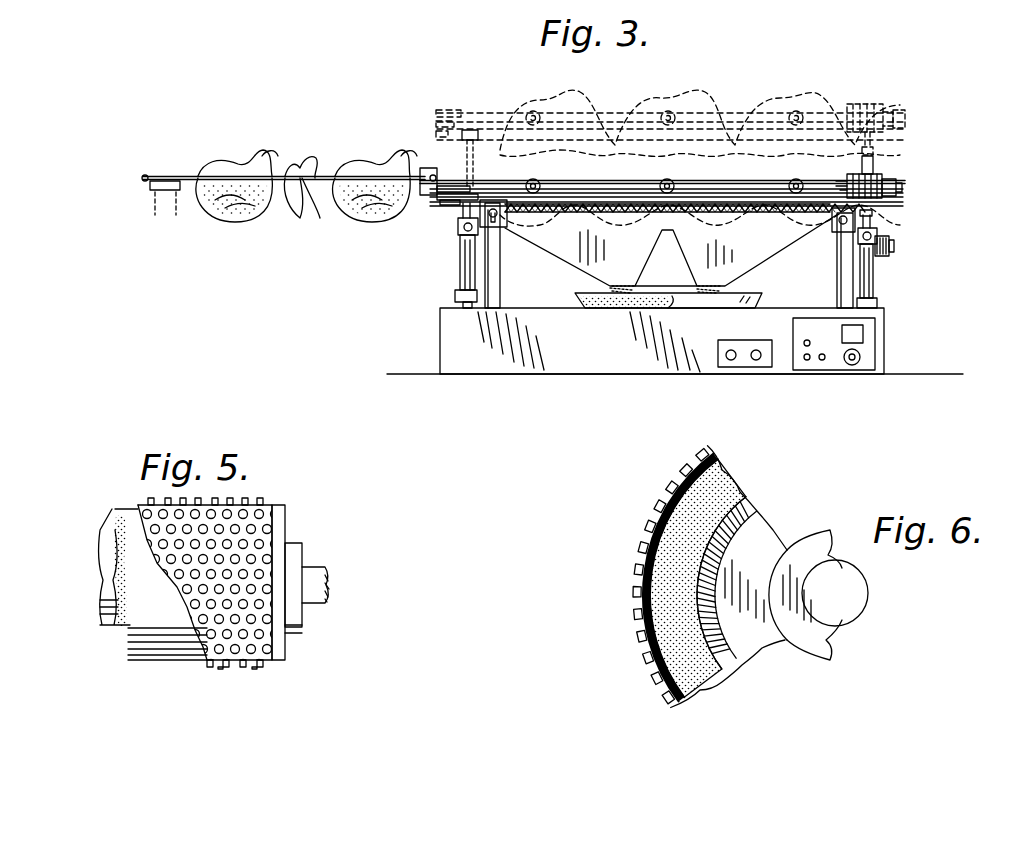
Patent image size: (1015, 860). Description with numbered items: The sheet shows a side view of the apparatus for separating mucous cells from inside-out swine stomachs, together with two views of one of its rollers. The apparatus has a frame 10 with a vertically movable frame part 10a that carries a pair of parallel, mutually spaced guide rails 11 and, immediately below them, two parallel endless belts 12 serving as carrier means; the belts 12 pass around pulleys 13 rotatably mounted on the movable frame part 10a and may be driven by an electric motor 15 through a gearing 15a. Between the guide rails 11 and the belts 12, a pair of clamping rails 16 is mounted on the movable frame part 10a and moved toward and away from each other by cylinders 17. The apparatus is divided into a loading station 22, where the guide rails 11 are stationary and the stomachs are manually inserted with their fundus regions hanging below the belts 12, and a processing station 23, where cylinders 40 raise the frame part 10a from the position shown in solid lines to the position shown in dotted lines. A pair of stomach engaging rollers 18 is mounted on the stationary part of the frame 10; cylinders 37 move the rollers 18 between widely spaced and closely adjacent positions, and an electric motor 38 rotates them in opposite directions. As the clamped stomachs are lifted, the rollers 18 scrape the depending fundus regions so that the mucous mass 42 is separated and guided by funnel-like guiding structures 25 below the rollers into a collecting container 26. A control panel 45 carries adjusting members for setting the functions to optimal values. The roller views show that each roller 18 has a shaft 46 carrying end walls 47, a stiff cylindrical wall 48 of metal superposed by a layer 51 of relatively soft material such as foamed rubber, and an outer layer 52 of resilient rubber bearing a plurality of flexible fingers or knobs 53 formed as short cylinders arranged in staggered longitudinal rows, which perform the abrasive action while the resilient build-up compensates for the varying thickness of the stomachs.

In FIG. 3, the frame 10 is at (436, 338).
In FIG. 3, the vertically movable frame part 10a is at (750, 103).
In FIG. 3, the guide rails 11 is at (182, 176).
In FIG. 3, the endless belts 12 is at (468, 205).
In FIG. 3, the pulleys 13 is at (428, 198).
In FIG. 3, the electric motor 15 is at (866, 104).
In FIG. 3, the gearing 15a is at (906, 121).
In FIG. 3, the clamping rails 16 is at (514, 180).
In FIG. 3, the cylinders 17 is at (535, 180).
In FIG. 3, the stomach engaging rollers 18 is at (790, 256).
In FIG. 5, the stomach engaging rollers 18 is at (282, 503).
In FIG. 6, the stomach engaging rollers 18 is at (702, 456).
In FIG. 3, the loading station 22 is at (290, 172).
In FIG. 3, the processing station 23 is at (630, 182).
In FIG. 3, the funnel-like guiding structures 25 is at (562, 262).
In FIG. 3, the collecting container 26 is at (690, 306).
In FIG. 3, the cylinders 37 is at (866, 220).
In FIG. 3, the electric motor 38 is at (888, 250).
In FIG. 3, the cylinders 40 is at (462, 270).
In FIG. 3, the mucous mass 42 is at (634, 290).
In FIG. 3, the control panel 45 is at (876, 340).
In FIG. 5, the shaft 46 is at (313, 573).
In FIG. 6, the shaft 46 is at (846, 620).
In FIG. 5, the end walls 47 is at (278, 632).
In FIG. 6, the end walls 47 is at (760, 656).
In FIG. 5, the cylindrical wall 48 is at (112, 625).
In FIG. 6, the cylindrical wall 48 is at (756, 510).
In FIG. 5, the layer 51 is at (158, 642).
In FIG. 6, the layer 51 is at (708, 688).
In FIG. 5, the outer layer 52 is at (207, 642).
In FIG. 6, the outer layer 52 is at (672, 696).
In FIG. 5, the fingers or knobs 53 is at (243, 666).
In FIG. 6, the fingers or knobs 53 is at (648, 535).